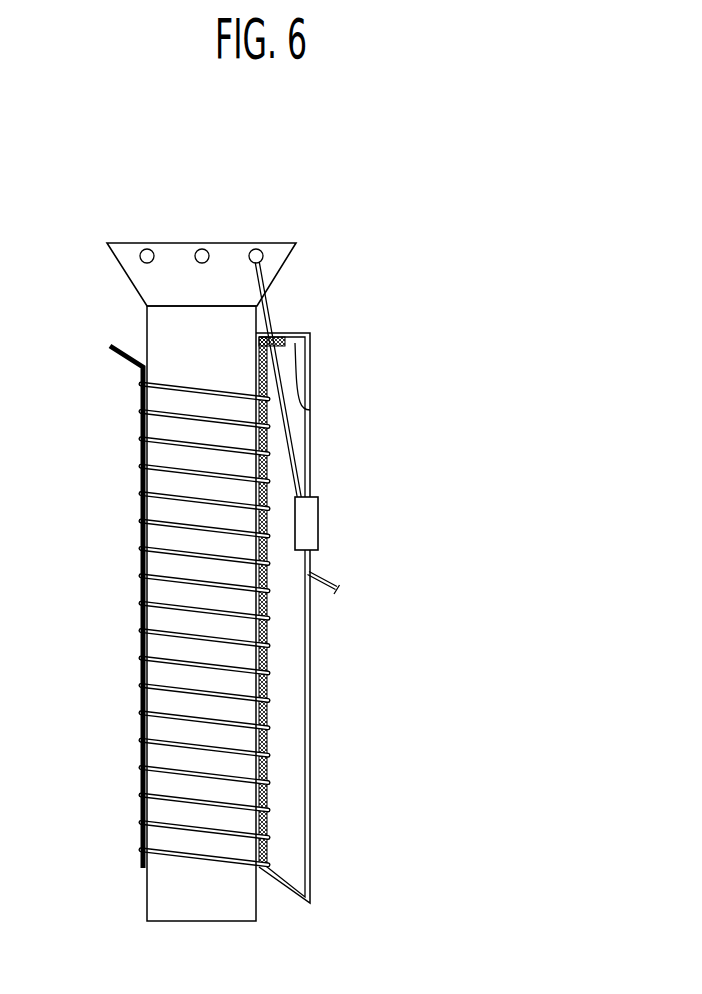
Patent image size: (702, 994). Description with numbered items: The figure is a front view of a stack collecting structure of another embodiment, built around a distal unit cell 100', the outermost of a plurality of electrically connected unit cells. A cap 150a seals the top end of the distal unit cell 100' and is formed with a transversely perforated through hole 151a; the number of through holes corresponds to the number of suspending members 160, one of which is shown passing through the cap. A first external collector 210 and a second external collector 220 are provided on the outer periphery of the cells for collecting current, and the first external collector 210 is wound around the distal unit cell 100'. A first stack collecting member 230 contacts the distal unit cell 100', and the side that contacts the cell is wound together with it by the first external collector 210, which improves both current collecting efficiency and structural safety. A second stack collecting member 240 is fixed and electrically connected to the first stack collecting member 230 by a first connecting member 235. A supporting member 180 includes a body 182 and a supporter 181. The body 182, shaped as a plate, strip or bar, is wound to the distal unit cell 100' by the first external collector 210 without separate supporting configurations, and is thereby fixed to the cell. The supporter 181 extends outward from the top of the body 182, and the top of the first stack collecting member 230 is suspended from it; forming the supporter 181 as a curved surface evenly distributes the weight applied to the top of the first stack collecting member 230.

The distal unit cell 100' is at (218, 613).
The cap 150a is at (221, 214).
The through hole 151a is at (203, 249).
The suspending member 160 is at (264, 308).
The supporting member 180 is at (413, 601).
The supporter 181 is at (287, 331).
The body 182 is at (268, 712).
The first external collector 210 is at (210, 830).
The second external collector 220 is at (141, 557).
The first stack collecting member 230 is at (257, 465).
The first connecting member 235 is at (318, 508).
The second stack collecting member 240 is at (324, 582).